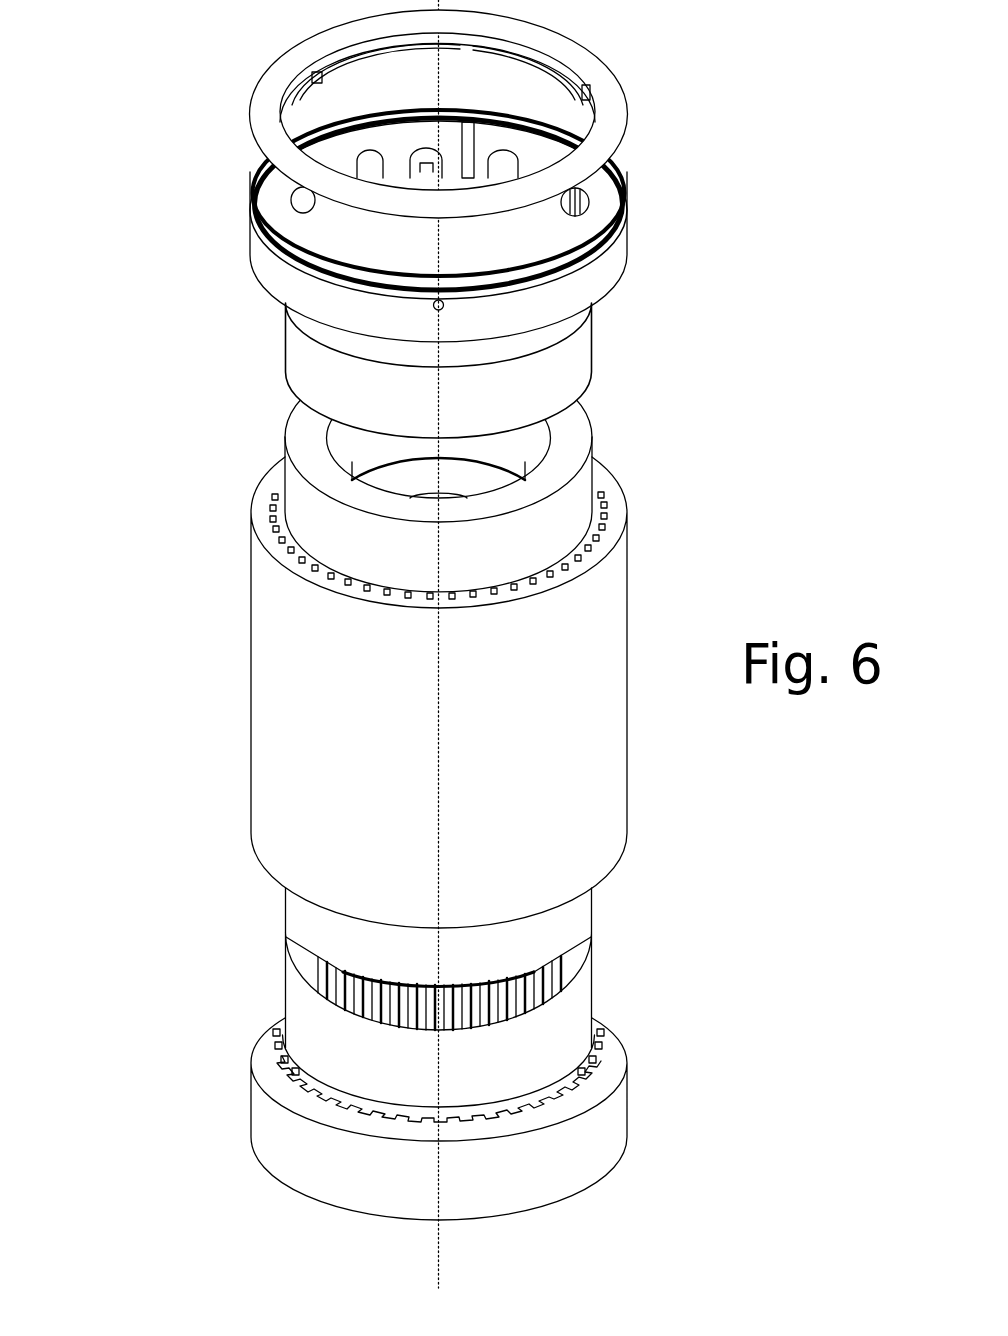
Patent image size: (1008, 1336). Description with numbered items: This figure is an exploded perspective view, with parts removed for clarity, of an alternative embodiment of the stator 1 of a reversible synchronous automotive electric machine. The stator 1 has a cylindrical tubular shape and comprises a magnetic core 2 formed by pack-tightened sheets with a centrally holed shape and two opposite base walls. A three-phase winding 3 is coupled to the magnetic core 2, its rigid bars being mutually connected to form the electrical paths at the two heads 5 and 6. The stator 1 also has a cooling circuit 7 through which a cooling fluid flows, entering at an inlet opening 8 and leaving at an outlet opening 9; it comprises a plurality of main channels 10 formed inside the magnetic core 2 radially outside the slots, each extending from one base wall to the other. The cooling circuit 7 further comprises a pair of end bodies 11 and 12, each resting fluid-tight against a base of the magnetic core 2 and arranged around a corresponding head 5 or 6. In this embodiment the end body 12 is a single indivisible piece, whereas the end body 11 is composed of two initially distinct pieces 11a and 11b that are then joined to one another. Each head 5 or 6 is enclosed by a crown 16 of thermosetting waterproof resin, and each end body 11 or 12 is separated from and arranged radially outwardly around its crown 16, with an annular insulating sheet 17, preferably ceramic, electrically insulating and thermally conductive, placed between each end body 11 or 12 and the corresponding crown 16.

The stator 1 is at (461, 644).
The magnetic core 2 is at (575, 822).
The three-phase winding 3 is at (425, 186).
The head 5 is at (454, 655).
The head 6 is at (525, 1074).
The cooling circuit 7 is at (566, 1088).
The inlet opening 8 is at (426, 209).
The outlet opening 9 is at (458, 312).
The main channels 10 is at (597, 515).
The end body 11 is at (409, 186).
The piece 11a is at (608, 97).
The piece 11b is at (275, 263).
The end body 12 is at (598, 1122).
The crown 16 is at (305, 505).
The annular insulating sheet 17 is at (550, 385).